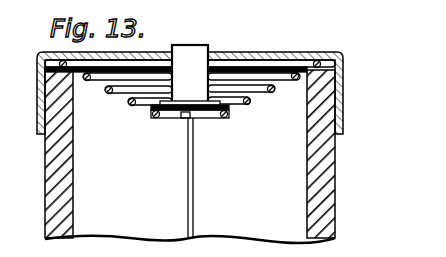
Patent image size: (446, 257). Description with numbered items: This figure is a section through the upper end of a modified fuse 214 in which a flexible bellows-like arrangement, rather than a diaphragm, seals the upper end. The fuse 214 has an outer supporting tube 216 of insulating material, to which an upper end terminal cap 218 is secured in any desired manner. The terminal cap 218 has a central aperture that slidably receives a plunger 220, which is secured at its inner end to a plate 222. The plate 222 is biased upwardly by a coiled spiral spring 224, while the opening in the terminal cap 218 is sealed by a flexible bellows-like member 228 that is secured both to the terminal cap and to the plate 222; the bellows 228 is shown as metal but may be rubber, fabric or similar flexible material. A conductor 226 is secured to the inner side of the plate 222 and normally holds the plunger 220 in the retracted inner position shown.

The fuse 214 is at (143, 200).
The outer supporting tube 216 is at (340, 211).
The terminal cap 218 is at (306, 51).
The plunger 220 is at (196, 50).
The plate 222 is at (202, 110).
The coiled spiral spring 224 is at (270, 93).
The conductor 226 is at (196, 203).
The flexible bellows-like member 228 is at (237, 71).